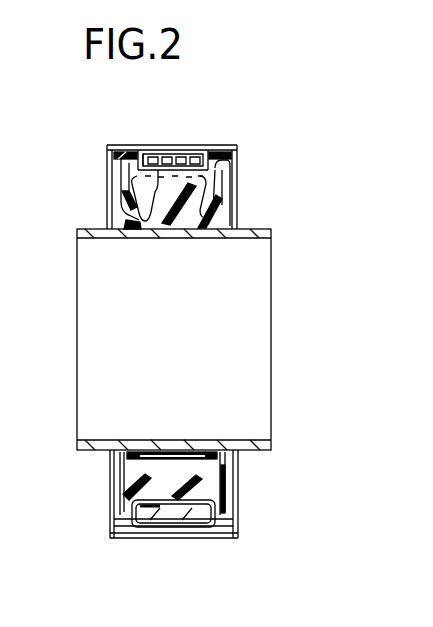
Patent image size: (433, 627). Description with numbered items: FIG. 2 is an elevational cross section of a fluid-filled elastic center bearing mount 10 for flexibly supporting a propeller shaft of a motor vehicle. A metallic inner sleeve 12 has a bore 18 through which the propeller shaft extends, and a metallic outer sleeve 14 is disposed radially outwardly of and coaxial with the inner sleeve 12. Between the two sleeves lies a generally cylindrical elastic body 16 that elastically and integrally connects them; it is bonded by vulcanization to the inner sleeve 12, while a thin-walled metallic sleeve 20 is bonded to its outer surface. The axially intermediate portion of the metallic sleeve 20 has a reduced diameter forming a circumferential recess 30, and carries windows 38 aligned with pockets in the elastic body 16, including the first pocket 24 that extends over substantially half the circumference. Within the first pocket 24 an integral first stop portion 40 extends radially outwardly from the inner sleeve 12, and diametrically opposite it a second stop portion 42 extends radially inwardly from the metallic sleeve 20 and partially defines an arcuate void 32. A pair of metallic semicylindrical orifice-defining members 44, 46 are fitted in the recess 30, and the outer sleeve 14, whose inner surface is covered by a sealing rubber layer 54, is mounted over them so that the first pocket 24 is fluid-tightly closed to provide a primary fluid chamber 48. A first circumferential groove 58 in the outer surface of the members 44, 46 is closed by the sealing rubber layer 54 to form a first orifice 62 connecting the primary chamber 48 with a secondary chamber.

The fluid-filled elastic center bearing mount 10 is at (297, 152).
The inner sleeve 12 is at (260, 232).
The outer sleeve 14 is at (145, 533).
The elastic body 16 is at (123, 198).
The bore 18 is at (143, 440).
The metallic sleeve 20 is at (117, 527).
The first pocket 24 is at (212, 195).
The circumferential recess 30 is at (193, 507).
The arcuate void 32 is at (212, 467).
The windows 38 is at (207, 152).
The first stop portion 40 is at (146, 158).
The second stop portion 42 is at (160, 482).
The orifice-defining member 44 is at (142, 152).
The orifice-defining member 46 is at (170, 523).
The primary fluid chamber 48 is at (140, 180).
The sealing rubber layer 54 is at (112, 153).
The first circumferential groove 58 is at (186, 158).
The first orifice 62 is at (161, 190).